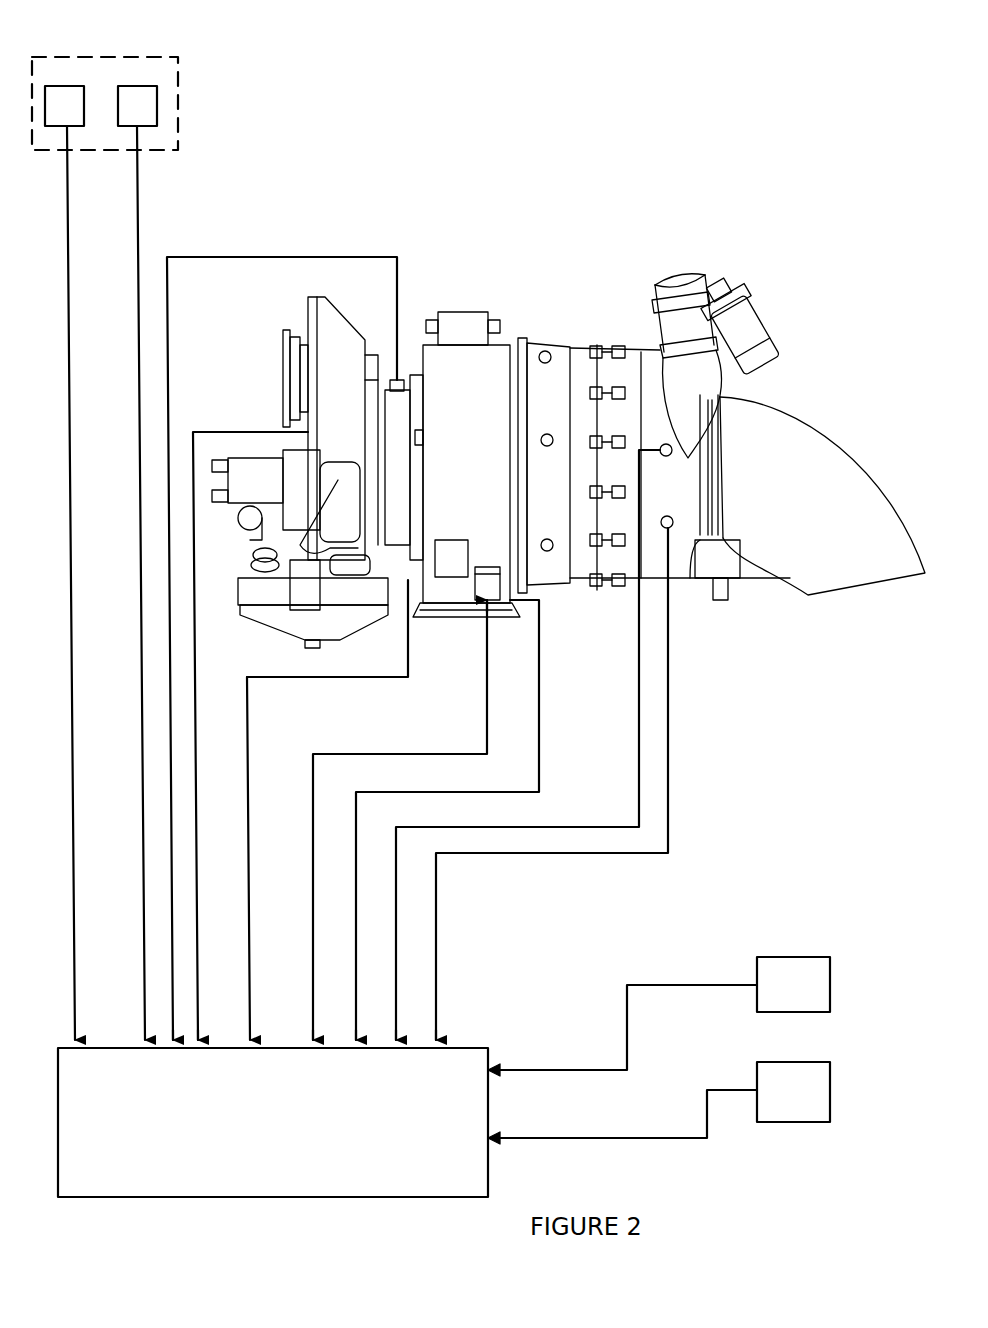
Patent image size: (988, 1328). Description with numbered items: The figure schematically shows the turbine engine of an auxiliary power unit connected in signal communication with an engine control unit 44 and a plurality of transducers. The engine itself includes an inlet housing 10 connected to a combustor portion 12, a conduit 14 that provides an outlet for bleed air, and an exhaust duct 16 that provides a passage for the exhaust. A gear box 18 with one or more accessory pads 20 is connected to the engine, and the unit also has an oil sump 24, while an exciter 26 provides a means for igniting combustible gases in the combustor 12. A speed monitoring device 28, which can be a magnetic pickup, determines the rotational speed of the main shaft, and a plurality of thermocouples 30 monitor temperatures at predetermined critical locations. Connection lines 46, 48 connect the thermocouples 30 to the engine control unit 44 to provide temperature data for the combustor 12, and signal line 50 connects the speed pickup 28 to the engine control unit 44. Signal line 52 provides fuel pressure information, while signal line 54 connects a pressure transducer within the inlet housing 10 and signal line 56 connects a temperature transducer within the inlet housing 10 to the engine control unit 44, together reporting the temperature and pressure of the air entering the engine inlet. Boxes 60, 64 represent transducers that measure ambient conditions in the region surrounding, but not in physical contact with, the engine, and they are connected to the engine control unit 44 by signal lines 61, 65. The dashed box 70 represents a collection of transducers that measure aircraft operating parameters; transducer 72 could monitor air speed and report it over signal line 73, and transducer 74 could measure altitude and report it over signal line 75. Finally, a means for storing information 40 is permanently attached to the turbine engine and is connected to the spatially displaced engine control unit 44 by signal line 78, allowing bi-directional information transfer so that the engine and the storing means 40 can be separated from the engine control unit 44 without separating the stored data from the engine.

The inlet housing 10 is at (504, 352).
The combustor portion 12 is at (651, 345).
The conduit 14 is at (700, 278).
The exhaust duct 16 is at (806, 450).
The gear box 18 is at (348, 300).
The accessory pads 20 is at (283, 352).
The oil sump 24 is at (260, 625).
The exciter 26 is at (457, 312).
The speed monitoring device 28 is at (400, 378).
The thermocouples 30 is at (671, 455).
The means for storing information 40 is at (491, 596).
The engine control unit 44 is at (412, 1178).
The connection line 46 is at (639, 610).
The connection line 48 is at (669, 772).
The signal line 50 is at (275, 257).
The signal line 52 is at (262, 432).
The signal line 54 is at (340, 679).
The signal line 56 is at (540, 738).
The box 60 is at (770, 957).
The signal line 61 is at (677, 985).
The box 64 is at (760, 1062).
The signal line 65 is at (692, 1138).
The dashed box 70 is at (178, 137).
The transducer 72 is at (68, 86).
The signal line 73 is at (80, 335).
The transducer 74 is at (157, 90).
The signal line 75 is at (139, 218).
The signal line 78 is at (312, 815).